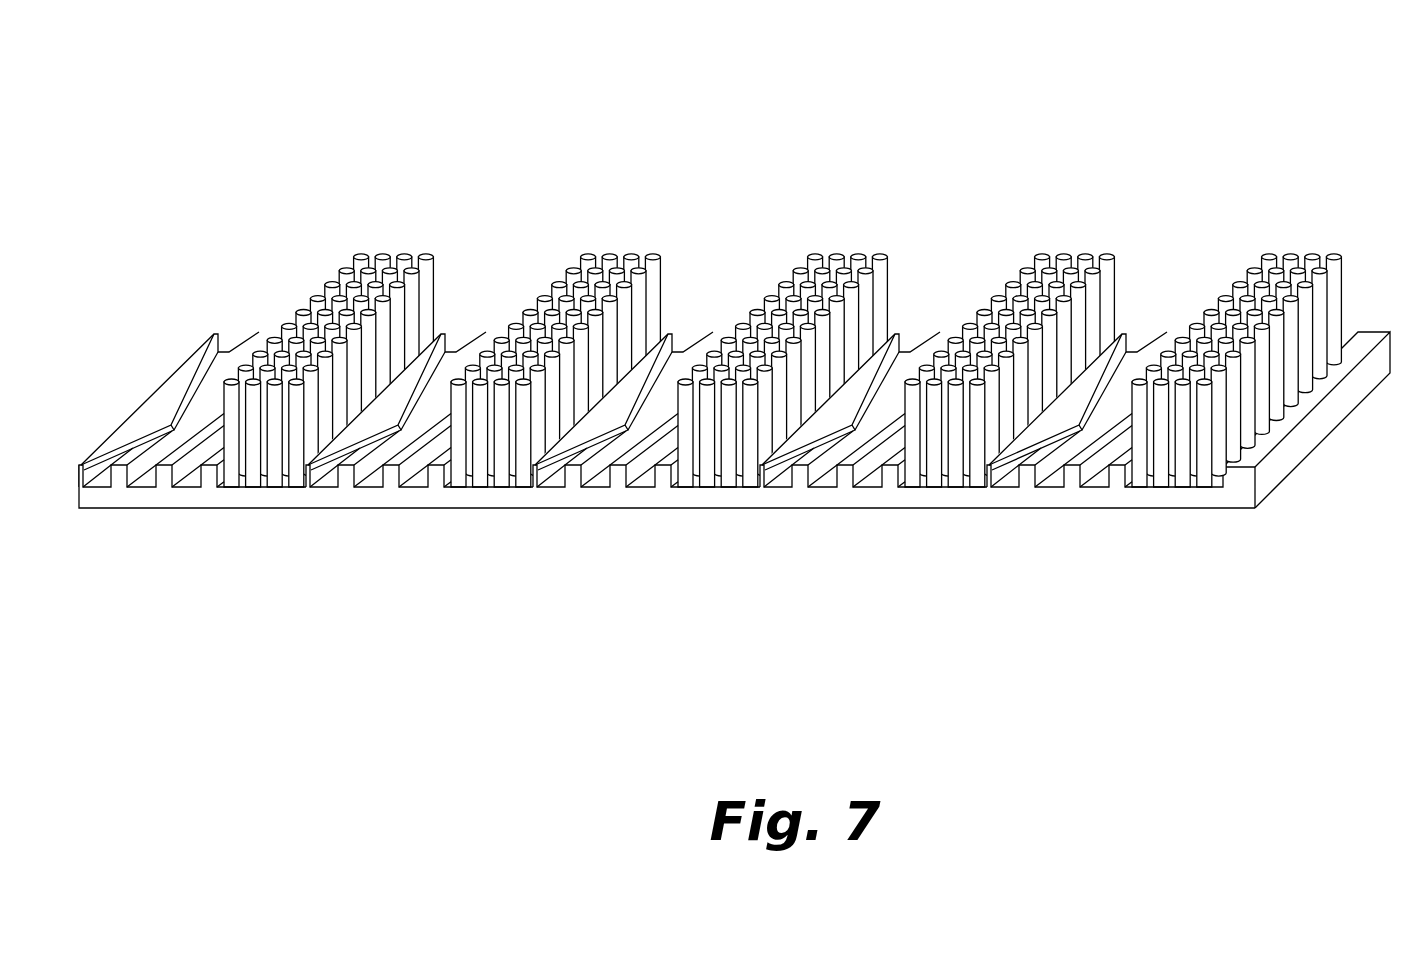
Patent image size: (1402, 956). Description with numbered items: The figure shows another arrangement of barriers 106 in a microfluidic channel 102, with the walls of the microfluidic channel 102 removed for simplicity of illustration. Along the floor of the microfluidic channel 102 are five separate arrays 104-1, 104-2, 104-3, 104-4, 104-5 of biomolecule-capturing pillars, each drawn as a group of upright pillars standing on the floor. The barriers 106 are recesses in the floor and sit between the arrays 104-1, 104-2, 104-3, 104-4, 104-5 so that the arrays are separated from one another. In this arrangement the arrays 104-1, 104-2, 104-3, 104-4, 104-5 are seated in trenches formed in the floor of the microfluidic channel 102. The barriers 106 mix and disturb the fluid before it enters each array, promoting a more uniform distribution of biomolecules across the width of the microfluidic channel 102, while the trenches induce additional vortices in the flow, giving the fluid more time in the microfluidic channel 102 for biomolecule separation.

The microfluidic channel 102 is at (378, 103).
The array of biomolecule-capturing pillars 104-1 is at (366, 225).
The array of biomolecule-capturing pillars 104-2 is at (611, 225).
The array of biomolecule-capturing pillars 104-3 is at (830, 225).
The array of biomolecule-capturing pillars 104-4 is at (1049, 225).
The array of biomolecule-capturing pillars 104-5 is at (1306, 225).
The barriers 106 is at (166, 472).